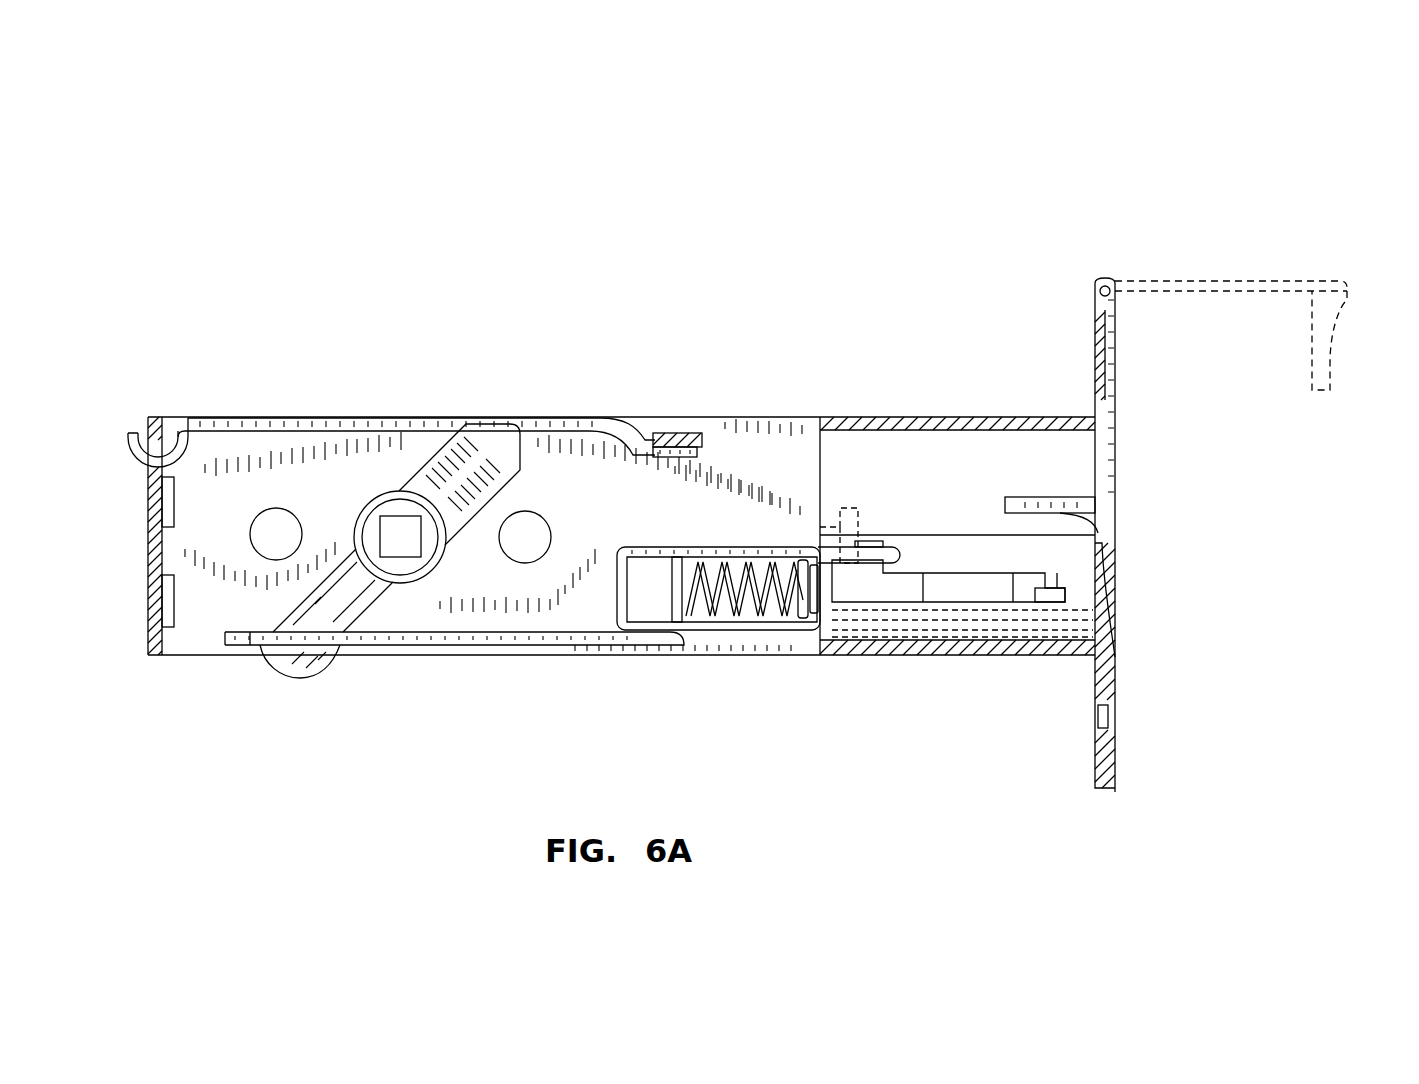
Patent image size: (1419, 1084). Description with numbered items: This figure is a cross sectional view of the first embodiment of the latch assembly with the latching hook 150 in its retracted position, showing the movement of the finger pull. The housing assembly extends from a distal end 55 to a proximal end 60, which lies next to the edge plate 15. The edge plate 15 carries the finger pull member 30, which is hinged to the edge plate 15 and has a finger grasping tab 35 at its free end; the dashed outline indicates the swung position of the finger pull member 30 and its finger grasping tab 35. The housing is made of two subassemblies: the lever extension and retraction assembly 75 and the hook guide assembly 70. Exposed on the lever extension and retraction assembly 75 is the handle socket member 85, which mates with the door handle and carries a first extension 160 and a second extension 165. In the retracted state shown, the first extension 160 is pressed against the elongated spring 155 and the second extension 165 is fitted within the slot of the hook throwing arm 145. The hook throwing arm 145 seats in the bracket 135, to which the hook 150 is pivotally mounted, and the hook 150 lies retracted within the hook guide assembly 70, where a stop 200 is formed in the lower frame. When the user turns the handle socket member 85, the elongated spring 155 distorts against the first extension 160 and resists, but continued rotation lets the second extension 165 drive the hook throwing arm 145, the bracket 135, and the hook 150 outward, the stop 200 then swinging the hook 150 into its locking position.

The edge plate 15 is at (1108, 775).
The finger pull member 30 is at (1108, 432).
The finger grasping tab 35 is at (1012, 500).
The distal end 55 is at (152, 418).
The proximal end 60 is at (1070, 393).
The hook guide assembly 70 is at (1086, 349).
The lever extension and retraction assembly 75 is at (146, 349).
The handle socket member 85 is at (400, 545).
The bracket 135 is at (655, 548).
The hook throwing arm 145 is at (498, 636).
The hook 150 is at (945, 590).
The elongated spring 155 is at (312, 418).
The first extension 160 is at (484, 440).
The second extension 165 is at (308, 668).
The stop 200 is at (1058, 595).